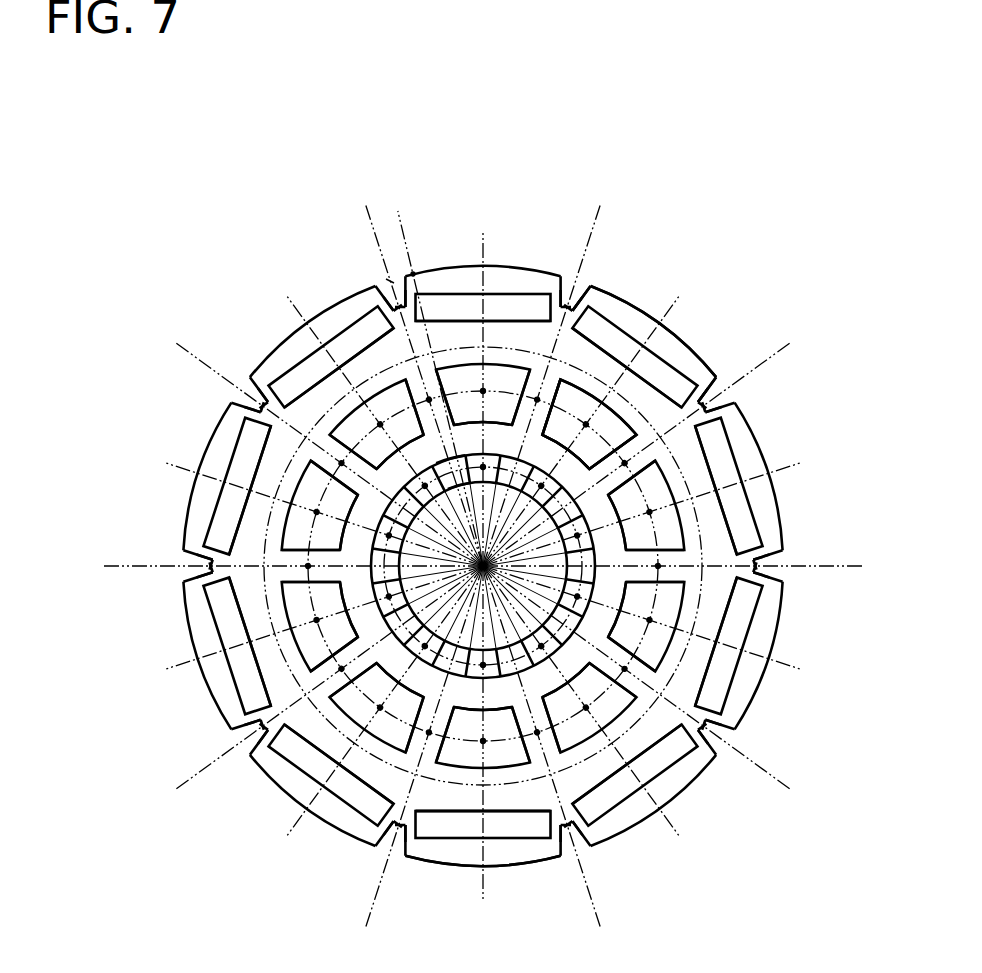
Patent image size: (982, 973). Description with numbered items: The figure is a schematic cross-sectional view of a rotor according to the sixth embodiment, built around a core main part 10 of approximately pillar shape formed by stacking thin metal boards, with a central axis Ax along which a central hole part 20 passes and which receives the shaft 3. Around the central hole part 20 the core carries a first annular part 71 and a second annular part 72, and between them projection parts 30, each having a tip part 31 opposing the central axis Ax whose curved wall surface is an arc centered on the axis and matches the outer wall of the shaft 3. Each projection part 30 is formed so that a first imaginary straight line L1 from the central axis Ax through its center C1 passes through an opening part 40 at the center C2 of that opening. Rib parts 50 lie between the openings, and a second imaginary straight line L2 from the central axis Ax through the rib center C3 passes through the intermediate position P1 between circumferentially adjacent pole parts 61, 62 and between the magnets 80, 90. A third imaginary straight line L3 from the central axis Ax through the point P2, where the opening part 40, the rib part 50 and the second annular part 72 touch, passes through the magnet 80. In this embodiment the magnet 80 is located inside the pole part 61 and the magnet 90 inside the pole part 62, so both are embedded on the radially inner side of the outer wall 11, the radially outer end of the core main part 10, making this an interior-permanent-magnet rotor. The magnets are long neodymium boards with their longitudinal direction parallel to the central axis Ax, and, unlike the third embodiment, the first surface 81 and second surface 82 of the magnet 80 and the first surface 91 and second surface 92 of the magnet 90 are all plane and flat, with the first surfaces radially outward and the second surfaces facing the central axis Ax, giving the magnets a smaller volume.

The shaft 3 is at (563, 500).
The tip part 31 is at (450, 470).
The core main part 10 is at (560, 282).
The outer wall 11 is at (598, 272).
The central hole part 20 is at (562, 432).
The projection part 30 is at (410, 430).
The opening part 40 is at (585, 395).
The rib part 50 is at (525, 370).
The pole part 61 is at (485, 265).
The pole part 62 is at (300, 322).
The first annular part 71 is at (470, 818).
The second annular part 72 is at (418, 866).
The magnet 80 is at (462, 292).
The first surface 81 is at (524, 292).
The second surface 82 is at (510, 375).
The magnet 90 is at (658, 320).
The first surface 91 is at (315, 345).
The second surface 92 is at (637, 428).
The first imaginary straight line L1 is at (350, 320).
The second imaginary straight line L2 is at (598, 208).
The third imaginary straight line L3 is at (405, 212).
The intermediate position P1 is at (388, 278).
The point P2 is at (414, 272).
The center of the projection part C1 is at (481, 466).
The center of the opening part C2 is at (470, 390).
The center of the rib part C3 is at (402, 365).
The central axis Ax is at (485, 565).